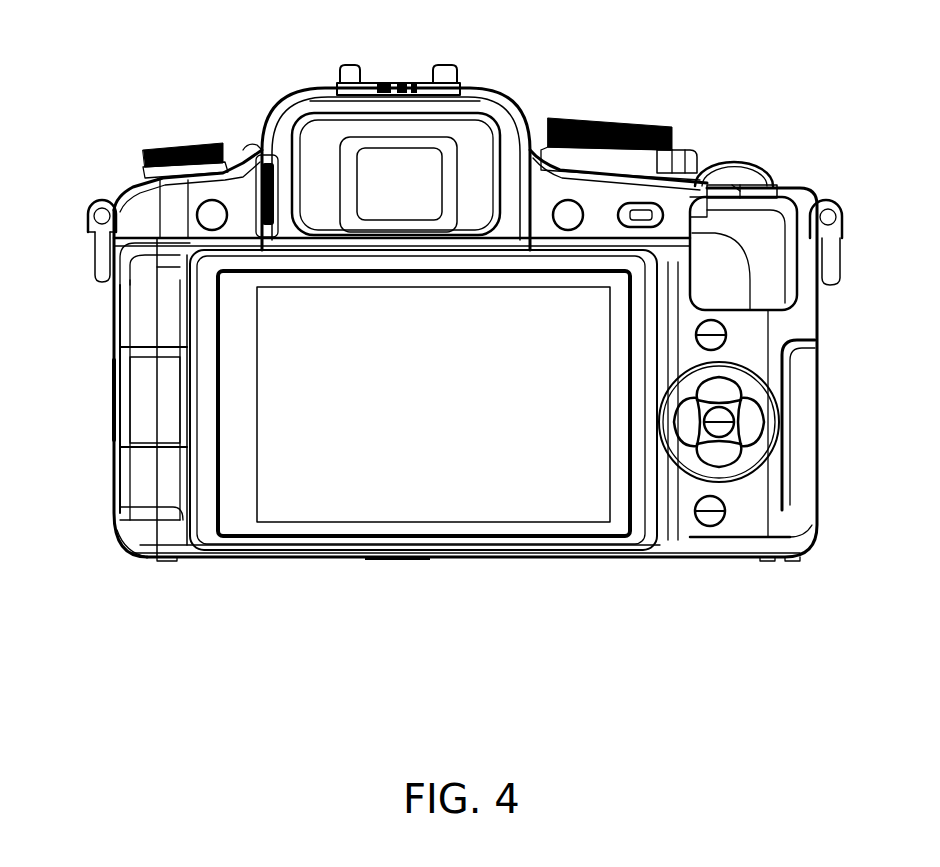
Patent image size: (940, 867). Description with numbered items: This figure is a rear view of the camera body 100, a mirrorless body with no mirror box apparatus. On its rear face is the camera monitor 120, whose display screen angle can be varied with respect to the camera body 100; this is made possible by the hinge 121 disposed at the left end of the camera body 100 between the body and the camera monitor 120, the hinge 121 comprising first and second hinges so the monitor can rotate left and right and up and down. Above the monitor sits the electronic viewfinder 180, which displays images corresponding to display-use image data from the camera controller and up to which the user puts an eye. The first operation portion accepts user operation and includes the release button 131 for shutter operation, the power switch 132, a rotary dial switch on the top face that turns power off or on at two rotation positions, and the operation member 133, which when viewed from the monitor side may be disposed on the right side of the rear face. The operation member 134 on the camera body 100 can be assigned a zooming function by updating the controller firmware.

The camera body 100 is at (325, 40).
The electronic viewfinder 180 is at (468, 138).
The camera monitor 120 is at (452, 493).
The hinge 121 is at (112, 382).
The release button 131 is at (745, 164).
The power switch 132 is at (688, 147).
The operation member 133 is at (775, 183).
The operation member 134 is at (758, 417).